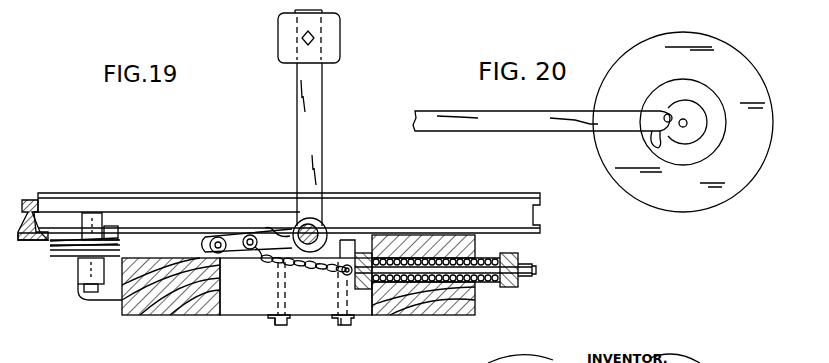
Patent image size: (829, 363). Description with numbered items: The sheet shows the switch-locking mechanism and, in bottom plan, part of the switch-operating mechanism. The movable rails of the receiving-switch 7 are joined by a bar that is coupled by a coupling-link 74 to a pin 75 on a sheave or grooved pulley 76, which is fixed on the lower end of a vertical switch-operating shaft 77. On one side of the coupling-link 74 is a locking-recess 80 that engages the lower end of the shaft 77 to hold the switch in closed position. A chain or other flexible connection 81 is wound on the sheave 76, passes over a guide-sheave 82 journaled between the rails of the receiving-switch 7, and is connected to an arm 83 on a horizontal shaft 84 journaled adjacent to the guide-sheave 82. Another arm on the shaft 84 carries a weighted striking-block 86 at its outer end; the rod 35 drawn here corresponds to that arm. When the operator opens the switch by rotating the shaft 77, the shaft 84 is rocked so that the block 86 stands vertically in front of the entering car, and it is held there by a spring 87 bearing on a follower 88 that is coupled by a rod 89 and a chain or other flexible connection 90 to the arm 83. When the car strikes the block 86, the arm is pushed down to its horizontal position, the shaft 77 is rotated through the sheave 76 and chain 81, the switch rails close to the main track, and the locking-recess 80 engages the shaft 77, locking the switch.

In FIG. 19, the receiving-switch 7 is at (288, 216).
In FIG. 19, the operating rod 35 is at (295, 128).
In FIG. 20, the coupling-link 74 is at (541, 137).
In FIG. 20, the pin 75 is at (664, 115).
In FIG. 20, the sheave or grooved pulley 76 is at (718, 98).
In FIG. 20, the switch-operating shaft 77 is at (688, 124).
In FIG. 20, the locking-recess 80 is at (636, 148).
In FIG. 19, the chain or flexible connection 81 is at (192, 250).
In FIG. 19, the guide-sheave 82 is at (70, 262).
In FIG. 19, the arm 83 is at (280, 230).
In FIG. 19, the horizontal shaft 84 is at (325, 229).
In FIG. 19, the weighted striking-block 86 is at (287, 36).
In FIG. 19, the spring 87 is at (486, 276).
In FIG. 19, the follower 88 is at (520, 262).
In FIG. 19, the rod 89 is at (487, 266).
In FIG. 19, the chain or flexible connection 90 is at (295, 268).